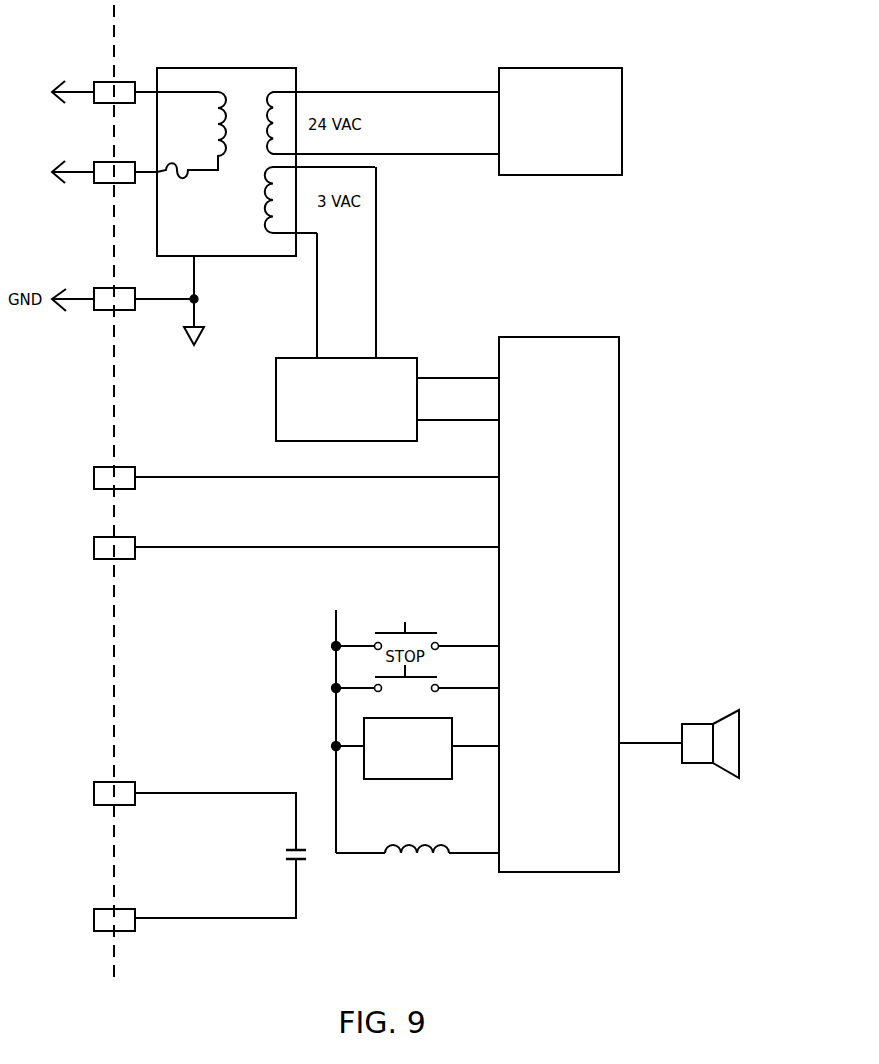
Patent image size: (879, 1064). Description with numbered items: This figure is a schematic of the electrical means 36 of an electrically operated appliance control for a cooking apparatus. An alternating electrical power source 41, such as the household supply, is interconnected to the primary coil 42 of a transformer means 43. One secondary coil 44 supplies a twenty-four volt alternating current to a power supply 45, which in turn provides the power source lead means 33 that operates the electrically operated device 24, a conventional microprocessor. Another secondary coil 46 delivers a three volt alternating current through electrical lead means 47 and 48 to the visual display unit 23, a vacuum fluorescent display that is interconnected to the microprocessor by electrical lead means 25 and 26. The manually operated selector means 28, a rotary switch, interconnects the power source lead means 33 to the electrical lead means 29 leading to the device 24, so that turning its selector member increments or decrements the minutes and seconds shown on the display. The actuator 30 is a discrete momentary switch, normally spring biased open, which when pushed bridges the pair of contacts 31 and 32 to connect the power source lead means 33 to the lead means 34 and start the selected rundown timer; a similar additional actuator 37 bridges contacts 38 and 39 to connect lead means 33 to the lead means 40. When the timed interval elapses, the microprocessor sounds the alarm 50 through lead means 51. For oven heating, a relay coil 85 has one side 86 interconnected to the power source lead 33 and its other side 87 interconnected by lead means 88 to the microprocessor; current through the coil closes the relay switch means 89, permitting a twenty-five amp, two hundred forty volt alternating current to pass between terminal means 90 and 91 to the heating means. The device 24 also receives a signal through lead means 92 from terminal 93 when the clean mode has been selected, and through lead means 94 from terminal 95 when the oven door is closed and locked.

The visual display unit 23 is at (400, 358).
The electrically operated device 24 is at (619, 410).
The electrical lead means 25 is at (440, 378).
The electrical lead means 26 is at (444, 420).
The manually operated selector means 28 is at (408, 779).
The electrical lead means 29 is at (483, 748).
The actuator 30 is at (422, 633).
The contact 31 is at (378, 651).
The contact 32 is at (438, 650).
The power source lead means 33 is at (333, 625).
The lead means 34 is at (480, 646).
The electrical means 36 is at (660, 104).
The actuator 37 is at (420, 680).
The contact 38 is at (378, 692).
The contact 39 is at (438, 692).
The lead means 40 is at (478, 688).
The alternating electrical power source 41 is at (77, 168).
The primary coil 42 is at (216, 118).
The transformer means 43 is at (234, 68).
The secondary coil 44 is at (269, 128).
The power supply 45 is at (550, 68).
The secondary coil 46 is at (268, 213).
The electrical lead means 47 is at (314, 296).
The electrical lead means 48 is at (378, 285).
The alarm 50 is at (735, 732).
The lead means 51 is at (638, 742).
The relay coil 85 is at (412, 845).
The side 86 is at (390, 857).
The side 87 is at (448, 846).
The lead means 88 is at (475, 855).
The relay switch means 89 is at (304, 872).
The terminal means 90 is at (98, 790).
The terminal means 91 is at (96, 915).
The lead means 92 is at (205, 476).
The terminal 93 is at (130, 466).
The lead means 94 is at (205, 546).
The terminal 95 is at (130, 560).